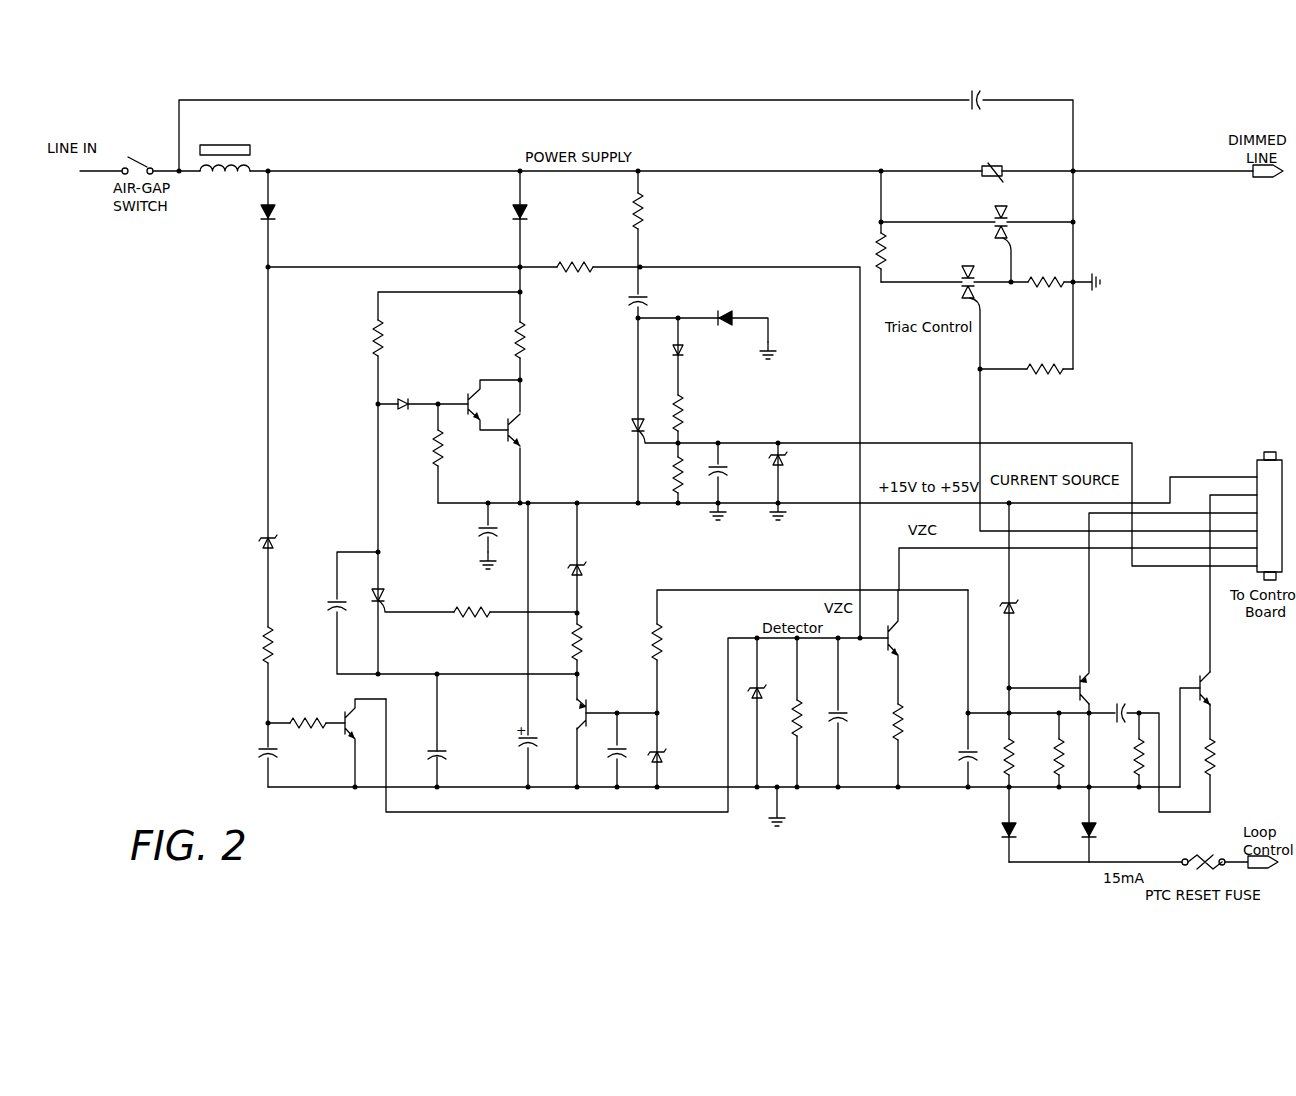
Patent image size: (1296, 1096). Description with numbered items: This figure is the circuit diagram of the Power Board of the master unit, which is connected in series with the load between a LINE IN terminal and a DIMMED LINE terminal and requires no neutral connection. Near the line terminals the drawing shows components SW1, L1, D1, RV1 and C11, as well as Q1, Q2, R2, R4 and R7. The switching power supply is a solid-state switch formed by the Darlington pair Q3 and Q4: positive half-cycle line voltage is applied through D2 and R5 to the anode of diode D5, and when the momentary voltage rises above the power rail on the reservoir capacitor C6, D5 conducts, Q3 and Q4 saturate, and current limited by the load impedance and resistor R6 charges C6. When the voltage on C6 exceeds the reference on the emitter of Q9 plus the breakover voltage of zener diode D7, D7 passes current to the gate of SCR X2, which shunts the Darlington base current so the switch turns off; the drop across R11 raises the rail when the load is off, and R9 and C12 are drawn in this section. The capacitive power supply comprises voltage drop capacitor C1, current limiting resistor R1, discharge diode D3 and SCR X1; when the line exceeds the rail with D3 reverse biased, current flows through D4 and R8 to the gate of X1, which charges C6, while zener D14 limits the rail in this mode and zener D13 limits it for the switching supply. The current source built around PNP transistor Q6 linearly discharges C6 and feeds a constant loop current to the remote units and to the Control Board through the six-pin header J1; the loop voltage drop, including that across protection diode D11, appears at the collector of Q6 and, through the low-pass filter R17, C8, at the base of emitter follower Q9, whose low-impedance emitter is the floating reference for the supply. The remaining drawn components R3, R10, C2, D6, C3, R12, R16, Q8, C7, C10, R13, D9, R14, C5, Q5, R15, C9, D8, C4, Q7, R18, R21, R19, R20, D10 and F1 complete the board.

The air-gap switch SW1 is at (138, 149).
The RF choke inductor L1 is at (232, 147).
The diode 1N4005 D1 is at (298, 229).
The diode D2 is at (491, 217).
The current limiting resistor R1 is at (668, 211).
The resistor 51K R3 is at (575, 251).
The voltage drop capacitor C1 is at (626, 299).
The capacitor 0.1uF 250V C11 is at (963, 114).
The varistor ERZ-07D241 RV1 is at (988, 163).
The triac Q2008LH4 Q1 is at (995, 205).
The resistor 220 ohm R2 is at (869, 251).
The triac MAC97A4 Q2 is at (964, 278).
The resistor 10K R4 is at (1046, 286).
The resistor 10k R7 is at (1046, 372).
The discharge diode D3 is at (735, 309).
The diode D4 is at (719, 354).
The resistor R8 is at (698, 413).
The resistor 20k R10 is at (665, 475).
The SCR X1 is at (637, 422).
The capacitor 22nF 100V C2 is at (728, 473).
The Zener diode D14 is at (783, 455).
The resistor R5 is at (362, 338).
The resistor R6 is at (543, 340).
The Darlington transistor Q3 is at (462, 393).
The Darlington transistor Q4 is at (532, 432).
The diode D5 is at (398, 410).
The resistor 20k R9 is at (426, 448).
The capacitor 0.1uF 63V C12 is at (497, 519).
The zener diode BZT52C43DI 43V D6 is at (277, 541).
The capacitor 3300pF 100V C3 is at (311, 611).
The SCR X2 is at (380, 592).
The resistor R11 is at (472, 616).
The resistor 30K R12 is at (254, 645).
The resistor 10K R16 is at (308, 711).
The transistor MMBT2222AL1 Q8 is at (352, 718).
The capacitor 15nF 50V C7 is at (233, 759).
The capacitor 0.1uF 63V C10 is at (447, 753).
The reservoir capacitor C6 is at (518, 745).
The Zener diode D7 is at (583, 568).
The resistor 10k R13 is at (565, 642).
The transistor Q9 is at (602, 704).
The resistor R17 is at (645, 643).
The capacitor C8 is at (607, 753).
The Zener diode D13 is at (662, 765).
The zener diode MA8047 4.7V D9 is at (752, 692).
The resistor 100k R14 is at (815, 699).
The capacitor 470pF 50V C5 is at (847, 715).
The transistor MMBTA06L Q5 is at (897, 637).
The resistor 6.2K R15 is at (915, 723).
The capacitor 1nF 100V C9 is at (957, 758).
The zener diode MA8075 7.5V D8 is at (1012, 610).
The PNP transistor Q6 is at (1083, 685).
The capacitor 1uF 50V C4 is at (1129, 697).
The transistor MMBTA06L Q7 is at (1235, 692).
The resistor 20k R18 is at (1025, 758).
The resistor 100K R21 is at (1062, 770).
The resistor 100k R19 is at (1124, 758).
The resistor 4.7K R20 is at (1227, 758).
The diode 1N4005 D10 is at (980, 837).
The protection diode D11 is at (1119, 838).
The PTC reset fuse LVR012 15mA F1 is at (1198, 845).
The header J1 is at (1264, 516).